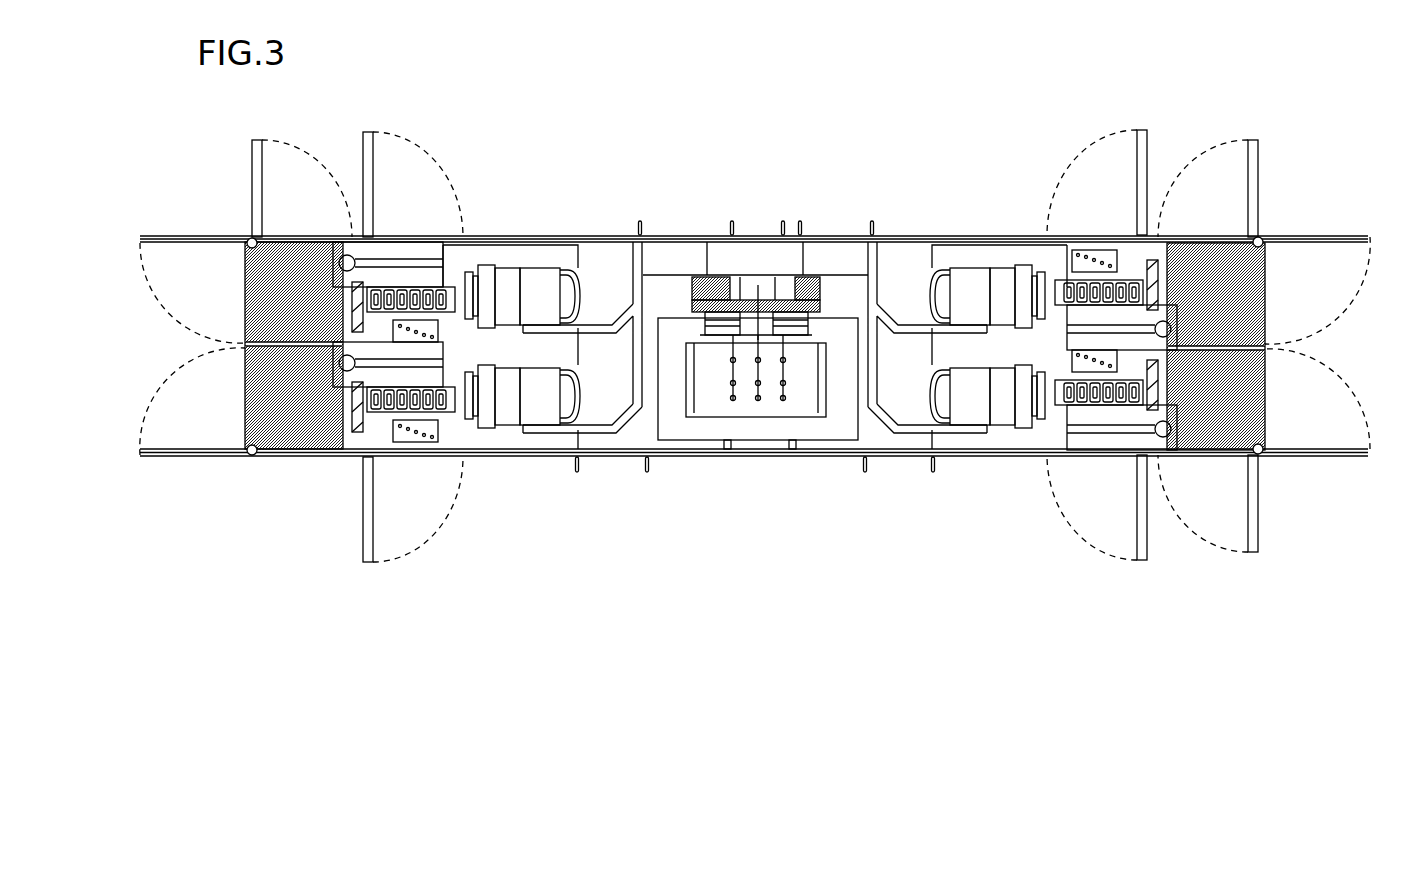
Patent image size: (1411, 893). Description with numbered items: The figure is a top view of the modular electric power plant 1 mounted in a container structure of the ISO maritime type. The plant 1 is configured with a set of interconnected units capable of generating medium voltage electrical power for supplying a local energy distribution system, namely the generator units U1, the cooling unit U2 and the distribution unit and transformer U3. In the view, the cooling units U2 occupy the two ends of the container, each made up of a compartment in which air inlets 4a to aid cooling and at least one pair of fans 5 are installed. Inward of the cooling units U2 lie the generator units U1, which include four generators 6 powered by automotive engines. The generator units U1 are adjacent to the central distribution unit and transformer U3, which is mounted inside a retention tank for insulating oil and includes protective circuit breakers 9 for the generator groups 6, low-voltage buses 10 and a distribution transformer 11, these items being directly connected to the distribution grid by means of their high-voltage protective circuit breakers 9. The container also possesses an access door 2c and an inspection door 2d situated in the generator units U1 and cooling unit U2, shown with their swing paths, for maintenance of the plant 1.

The modular electric power plant 1 is at (832, 192).
The access door 2c is at (1137, 515).
The inspection door 2d is at (1342, 248).
The air inlet 4a is at (245, 420).
The fan 5 is at (252, 236).
The generator 6 is at (518, 292).
The protective circuit breaker 9 is at (758, 395).
The low-voltage bus 10 is at (758, 368).
The distribution transformer 11 is at (783, 368).
The generator unit U1 is at (755, 358).
The cooling unit U2 is at (755, 334).
The distribution unit and transformer U3 is at (755, 350).